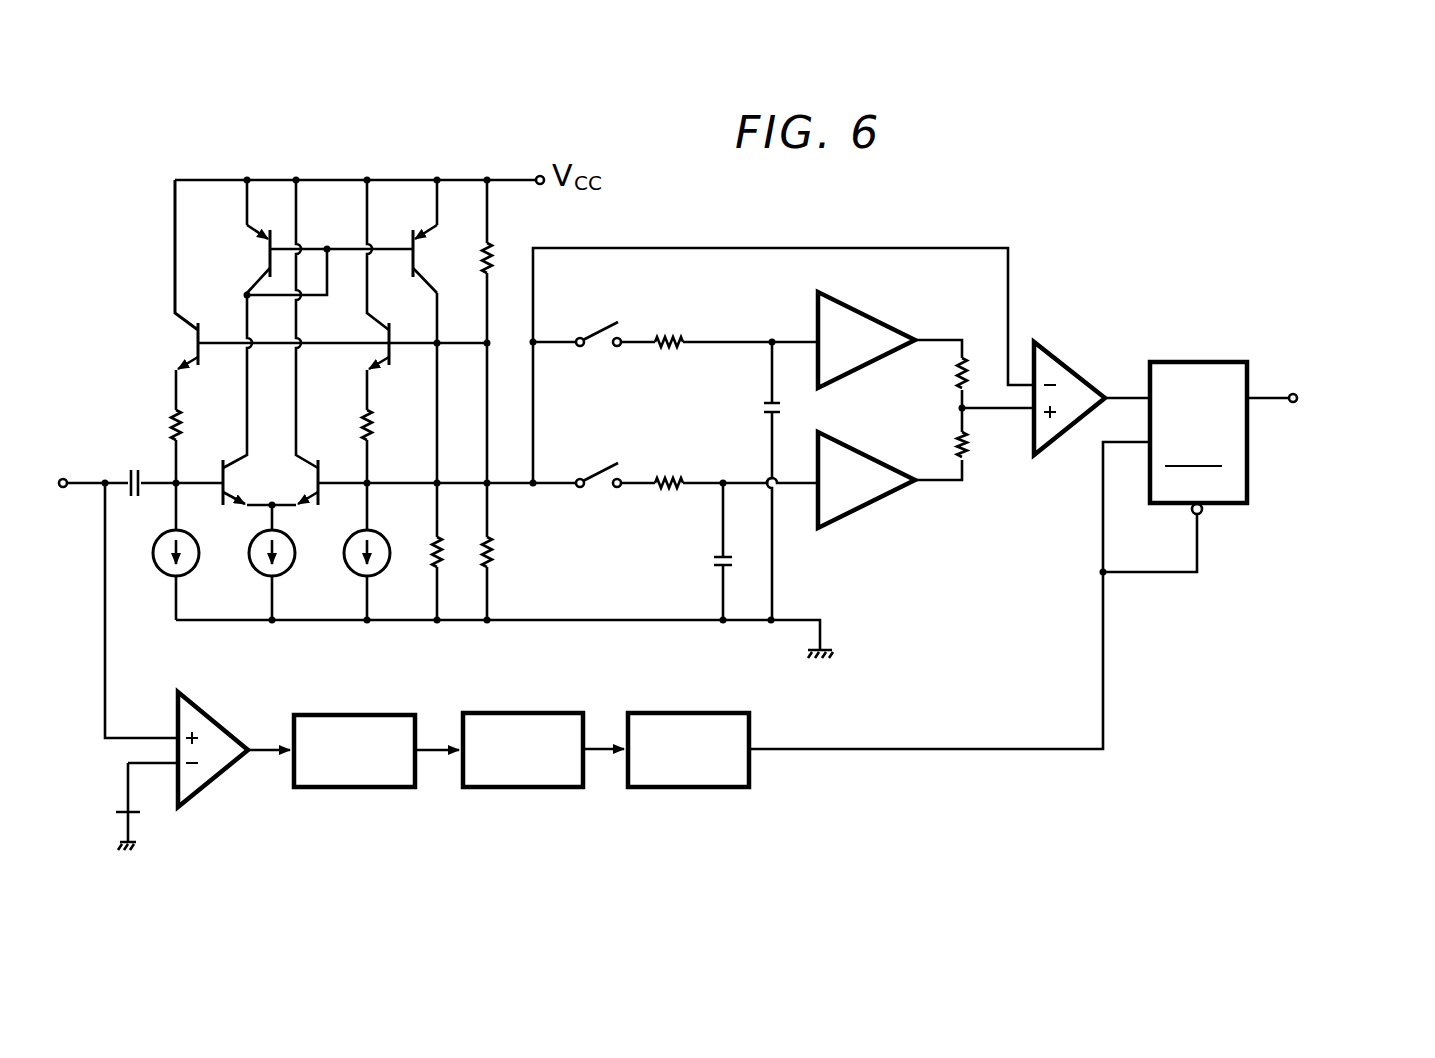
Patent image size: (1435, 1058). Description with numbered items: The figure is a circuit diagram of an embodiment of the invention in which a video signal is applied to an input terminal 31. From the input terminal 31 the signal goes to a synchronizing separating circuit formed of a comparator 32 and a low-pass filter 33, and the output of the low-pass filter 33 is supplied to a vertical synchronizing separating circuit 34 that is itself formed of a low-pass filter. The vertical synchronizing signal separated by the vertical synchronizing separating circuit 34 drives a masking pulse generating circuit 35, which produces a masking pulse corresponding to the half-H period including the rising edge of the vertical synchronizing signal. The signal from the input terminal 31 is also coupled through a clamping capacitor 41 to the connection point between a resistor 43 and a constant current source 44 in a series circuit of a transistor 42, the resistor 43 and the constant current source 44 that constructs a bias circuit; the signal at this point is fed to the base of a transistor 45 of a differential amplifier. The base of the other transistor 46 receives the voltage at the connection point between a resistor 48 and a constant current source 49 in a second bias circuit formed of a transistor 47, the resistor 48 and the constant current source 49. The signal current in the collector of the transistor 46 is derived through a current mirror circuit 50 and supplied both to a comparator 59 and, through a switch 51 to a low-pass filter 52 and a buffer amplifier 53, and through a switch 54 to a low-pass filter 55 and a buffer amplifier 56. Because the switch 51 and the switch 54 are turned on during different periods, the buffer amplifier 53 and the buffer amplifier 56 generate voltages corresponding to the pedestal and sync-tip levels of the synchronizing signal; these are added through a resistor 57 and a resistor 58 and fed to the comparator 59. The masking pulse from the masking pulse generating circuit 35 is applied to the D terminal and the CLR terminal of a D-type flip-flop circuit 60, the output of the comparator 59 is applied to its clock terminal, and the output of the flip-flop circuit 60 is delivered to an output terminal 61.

The input terminal 31 is at (64, 490).
The comparator 32 is at (220, 778).
The low-pass filter 33 is at (368, 787).
The vertical synchronizing separating circuit 34 is at (531, 787).
The masking pulse generating circuit 35 is at (686, 787).
The clamping capacitor 41 is at (131, 491).
The transistor 42 is at (202, 324).
The resistor 43 is at (173, 426).
The constant current source 44 is at (154, 570).
The transistor 45 is at (221, 468).
The transistor 46 is at (335, 458).
The transistor 47 is at (390, 340).
The resistor 48 is at (372, 426).
The constant current source 49 is at (385, 570).
The current mirror circuit 50 is at (352, 231).
The switch 51 is at (598, 345).
The low-pass filter 52 is at (731, 398).
The buffer amplifier 53 is at (878, 324).
The switch 54 is at (598, 486).
The low-pass filter 55 is at (704, 538).
The buffer amplifier 56 is at (880, 510).
The resistor 57 is at (956, 370).
The resistor 58 is at (956, 440).
The comparator 59 is at (1063, 448).
The D-type flip-flop circuit 60 is at (1228, 509).
The output terminal 61 is at (1292, 403).